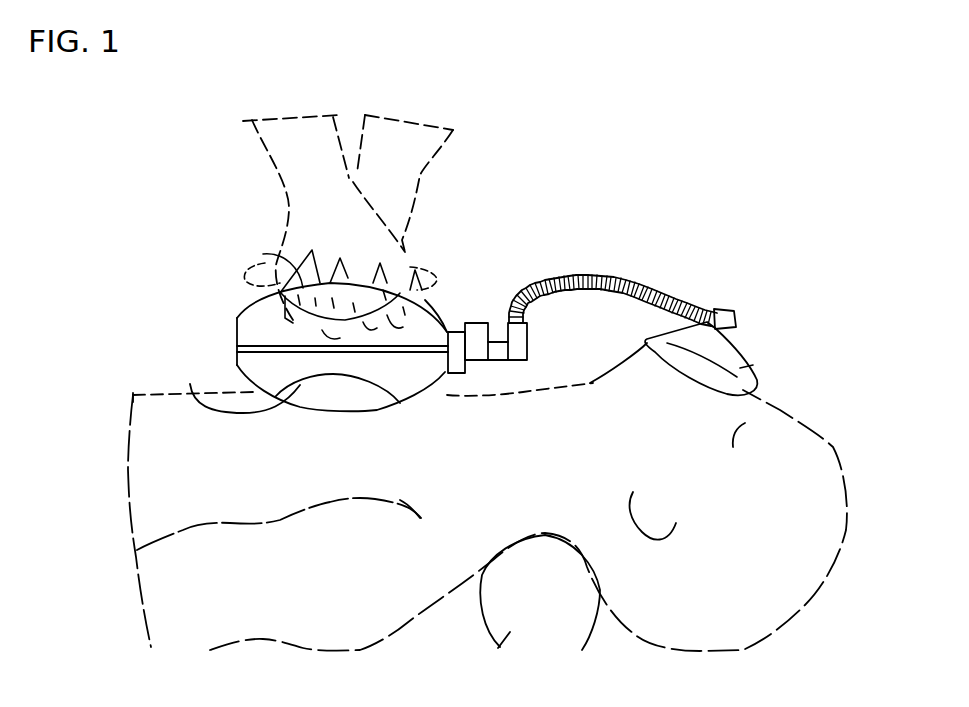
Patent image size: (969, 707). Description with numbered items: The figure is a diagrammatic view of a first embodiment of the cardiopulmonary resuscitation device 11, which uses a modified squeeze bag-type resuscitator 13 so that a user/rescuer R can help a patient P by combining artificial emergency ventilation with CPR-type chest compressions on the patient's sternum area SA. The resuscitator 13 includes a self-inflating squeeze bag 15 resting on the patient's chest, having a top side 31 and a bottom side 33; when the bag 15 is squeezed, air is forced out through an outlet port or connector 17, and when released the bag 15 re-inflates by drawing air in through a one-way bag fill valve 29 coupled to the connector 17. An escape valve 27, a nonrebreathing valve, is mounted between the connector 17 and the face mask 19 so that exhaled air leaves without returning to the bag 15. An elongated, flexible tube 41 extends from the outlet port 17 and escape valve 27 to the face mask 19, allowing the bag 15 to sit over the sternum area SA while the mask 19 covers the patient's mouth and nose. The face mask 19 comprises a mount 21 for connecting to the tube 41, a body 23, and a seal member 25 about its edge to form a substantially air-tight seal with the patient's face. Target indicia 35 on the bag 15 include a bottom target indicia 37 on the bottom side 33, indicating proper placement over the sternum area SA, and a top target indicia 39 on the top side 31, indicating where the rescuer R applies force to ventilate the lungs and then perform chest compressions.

The cardiopulmonary resuscitation device 11 is at (743, 268).
The squeeze bag-type resuscitator 13 is at (247, 306).
The self-inflating squeeze bag 15 is at (245, 331).
The outlet port or connector 17 is at (457, 326).
The face mask 19 is at (733, 364).
The mount 21 is at (735, 321).
The body 23 is at (727, 345).
The seal member 25 is at (745, 390).
The escape valve 27 is at (520, 347).
The bag fill valve 29 is at (480, 323).
The top side 31 is at (448, 330).
The bottom side 33 is at (257, 372).
The target indicia 35 is at (273, 261).
The bottom target indicia 37 is at (231, 392).
The top target indicia 39 is at (385, 295).
The tube 41 is at (594, 278).
The user/rescuer R is at (420, 170).
The patient P is at (845, 508).
The sternum area SA is at (383, 418).